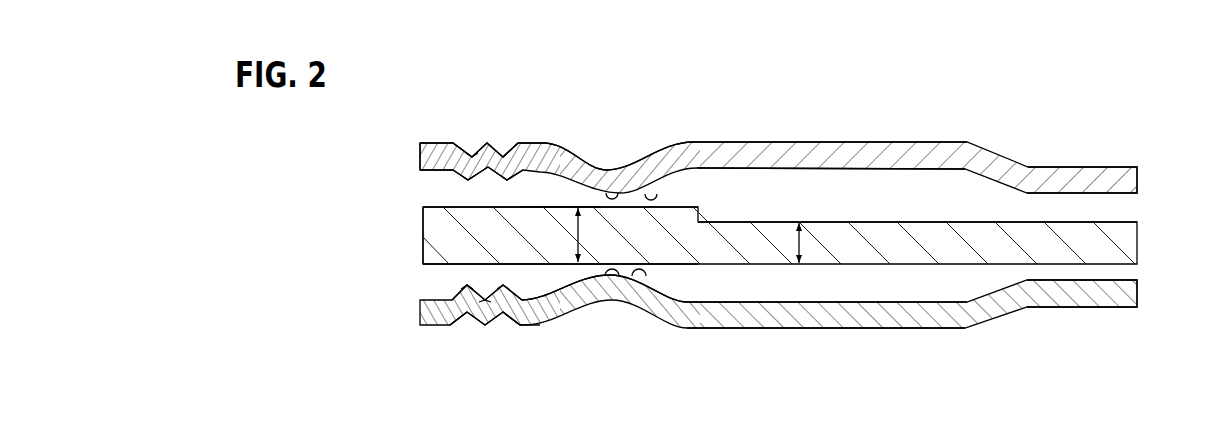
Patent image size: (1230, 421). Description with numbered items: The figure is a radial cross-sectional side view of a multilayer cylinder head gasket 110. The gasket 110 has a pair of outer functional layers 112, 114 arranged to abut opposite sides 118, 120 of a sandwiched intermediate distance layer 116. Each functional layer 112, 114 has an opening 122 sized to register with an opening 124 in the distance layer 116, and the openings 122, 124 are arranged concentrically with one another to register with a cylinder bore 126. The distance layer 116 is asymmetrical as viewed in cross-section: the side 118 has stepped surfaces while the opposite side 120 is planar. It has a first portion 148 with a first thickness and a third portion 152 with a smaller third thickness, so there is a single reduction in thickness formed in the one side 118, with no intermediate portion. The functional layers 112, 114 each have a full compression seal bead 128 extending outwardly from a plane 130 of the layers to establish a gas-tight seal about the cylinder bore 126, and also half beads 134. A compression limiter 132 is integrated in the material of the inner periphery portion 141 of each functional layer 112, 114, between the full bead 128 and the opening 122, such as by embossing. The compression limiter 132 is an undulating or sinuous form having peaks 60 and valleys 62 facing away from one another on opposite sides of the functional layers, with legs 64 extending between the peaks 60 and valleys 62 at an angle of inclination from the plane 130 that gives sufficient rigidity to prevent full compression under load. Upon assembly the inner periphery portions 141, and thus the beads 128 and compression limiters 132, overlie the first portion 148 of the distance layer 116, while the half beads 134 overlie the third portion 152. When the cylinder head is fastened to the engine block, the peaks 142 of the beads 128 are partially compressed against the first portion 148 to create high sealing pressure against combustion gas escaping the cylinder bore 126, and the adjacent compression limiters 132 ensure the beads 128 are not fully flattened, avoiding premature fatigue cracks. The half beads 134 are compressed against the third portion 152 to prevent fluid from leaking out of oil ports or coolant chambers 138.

The peaks 60 is at (472, 157).
The valleys 62 is at (464, 150).
The legs 64 is at (466, 181).
The multilayer gasket 110 is at (746, 240).
The functional layer 112 is at (540, 143).
The functional layer 114 is at (558, 326).
The distance layer 116 is at (422, 220).
The side of distance layer 118 is at (432, 200).
The opposite side of distance layer 120 is at (433, 266).
The opening in functional layer 122 is at (420, 155).
The opening in distance layer 124 is at (422, 250).
The cylinder bore 126 is at (322, 236).
The full compression seal bead 128 is at (655, 195).
The plane of the layers 130 is at (724, 174).
The compression limiter 132 is at (484, 128).
The half bead 134 is at (1083, 167).
The oil ports or coolant chambers 138 is at (1189, 246).
The inner periphery portion 141 is at (518, 142).
The peaks of the beads 142 is at (608, 195).
The first portion 148 is at (557, 207).
The third portion 152 is at (845, 222).